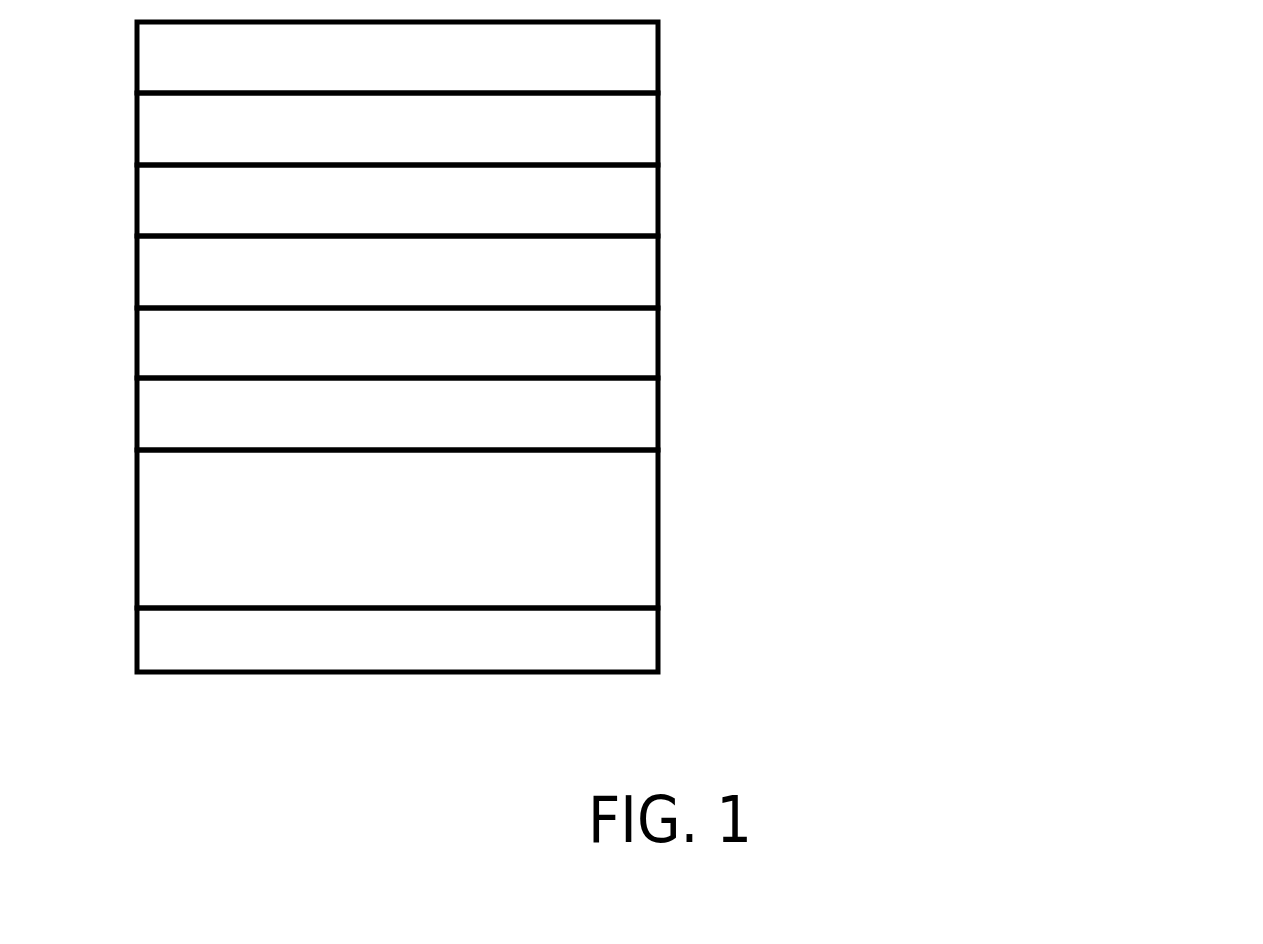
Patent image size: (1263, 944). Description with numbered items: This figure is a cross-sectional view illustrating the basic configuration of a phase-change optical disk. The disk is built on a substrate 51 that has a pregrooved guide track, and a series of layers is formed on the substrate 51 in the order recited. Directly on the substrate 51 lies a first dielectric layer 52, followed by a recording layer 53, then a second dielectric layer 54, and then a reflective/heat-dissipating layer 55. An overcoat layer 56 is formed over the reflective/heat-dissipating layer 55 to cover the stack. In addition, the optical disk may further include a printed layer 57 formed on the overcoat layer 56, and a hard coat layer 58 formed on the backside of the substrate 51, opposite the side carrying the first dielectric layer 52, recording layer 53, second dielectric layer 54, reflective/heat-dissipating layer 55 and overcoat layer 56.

The substrate 51 is at (630, 543).
The first dielectric layer 52 is at (623, 418).
The recording layer 53 is at (628, 345).
The second dielectric layer 54 is at (628, 273).
The reflective/heat-dissipating layer 55 is at (628, 205).
The overcoat layer 56 is at (633, 128).
The printed layer 57 is at (633, 67).
The hard coat layer 58 is at (637, 643).